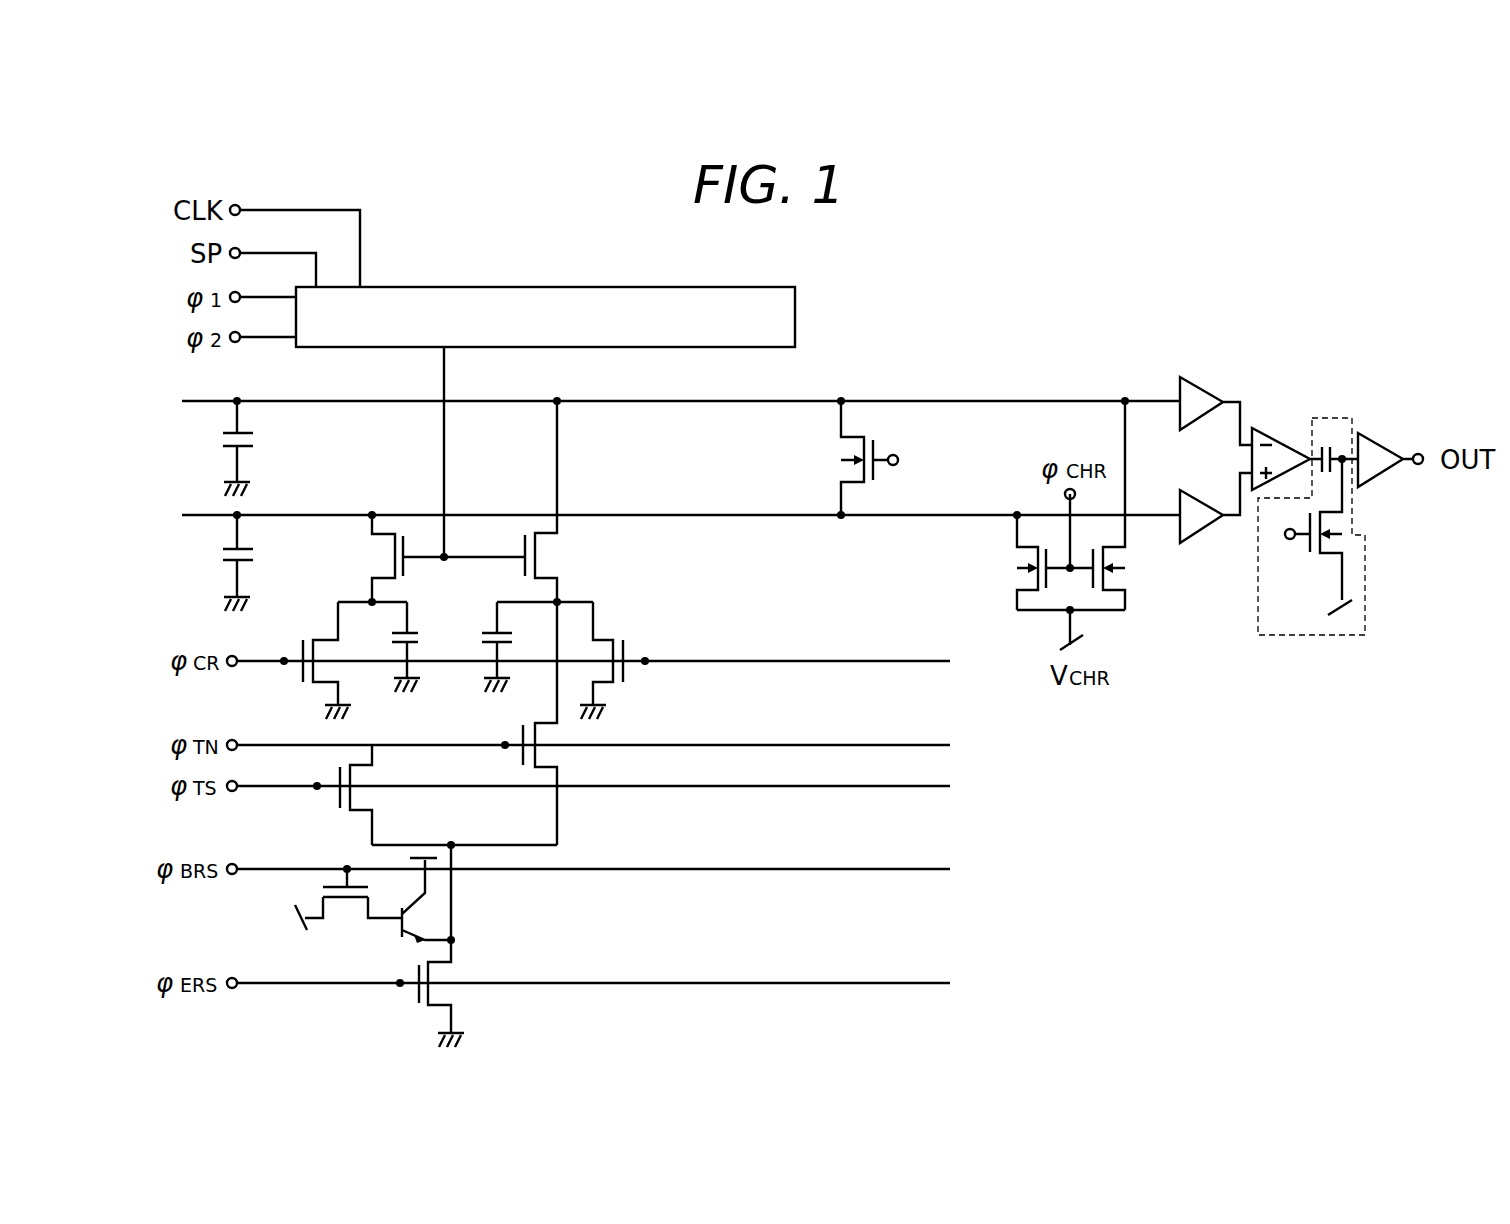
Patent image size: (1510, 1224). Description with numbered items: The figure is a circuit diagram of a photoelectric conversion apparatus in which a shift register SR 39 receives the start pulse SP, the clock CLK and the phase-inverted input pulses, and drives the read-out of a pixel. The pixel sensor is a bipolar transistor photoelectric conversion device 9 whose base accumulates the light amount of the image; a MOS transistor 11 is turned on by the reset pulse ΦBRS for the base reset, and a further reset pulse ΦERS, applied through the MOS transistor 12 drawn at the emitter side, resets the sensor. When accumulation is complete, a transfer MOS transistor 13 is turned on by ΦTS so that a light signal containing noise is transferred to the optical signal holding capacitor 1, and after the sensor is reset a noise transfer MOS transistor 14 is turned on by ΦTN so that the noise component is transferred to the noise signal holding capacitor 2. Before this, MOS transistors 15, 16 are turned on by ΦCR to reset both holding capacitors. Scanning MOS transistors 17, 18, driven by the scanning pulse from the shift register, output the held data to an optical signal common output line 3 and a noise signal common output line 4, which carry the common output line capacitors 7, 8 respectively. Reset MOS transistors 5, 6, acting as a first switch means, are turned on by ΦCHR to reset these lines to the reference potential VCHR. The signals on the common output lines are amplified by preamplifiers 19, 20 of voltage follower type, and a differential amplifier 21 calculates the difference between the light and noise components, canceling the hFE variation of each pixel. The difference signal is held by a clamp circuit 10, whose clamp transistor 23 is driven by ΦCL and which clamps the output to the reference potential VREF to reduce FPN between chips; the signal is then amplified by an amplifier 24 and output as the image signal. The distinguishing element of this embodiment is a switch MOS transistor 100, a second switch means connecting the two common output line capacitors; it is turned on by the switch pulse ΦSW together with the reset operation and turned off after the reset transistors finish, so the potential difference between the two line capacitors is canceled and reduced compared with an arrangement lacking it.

The optical signal holding capacitor CTS 1 is at (420, 622).
The noise signal holding capacitor CTN 2 is at (486, 622).
The optical signal common output line 3 is at (688, 512).
The noise signal common output line 4 is at (760, 399).
The reset MOS transistor 5 is at (1018, 577).
The reset MOS transistor 6 is at (1120, 582).
The capacitor CHS 7 is at (212, 551).
The capacitor CHN 8 is at (212, 438).
The photoelectric conversion device 9 is at (418, 917).
The clamp circuit 10 is at (1365, 580).
The MOS transistor 11 is at (343, 912).
The emitter reset transistor 12 is at (445, 972).
The transfer MOS transistor 13 is at (365, 797).
The noise transfer MOS transistor 14 is at (553, 757).
The MOS transistor 15 is at (292, 640).
The MOS transistor 16 is at (622, 692).
The scanning MOS transistor 17 is at (385, 554).
The scanning MOS transistor 18 is at (552, 558).
The preamplifier 19 is at (1205, 528).
The preamplifier 20 is at (1212, 373).
The differential amplifier 21 is at (1278, 428).
The clamp transistor 23 is at (1330, 527).
The amplifier 24 is at (1380, 430).
The shift register SR 39 is at (745, 287).
The switch MOS transistor 100 is at (880, 450).